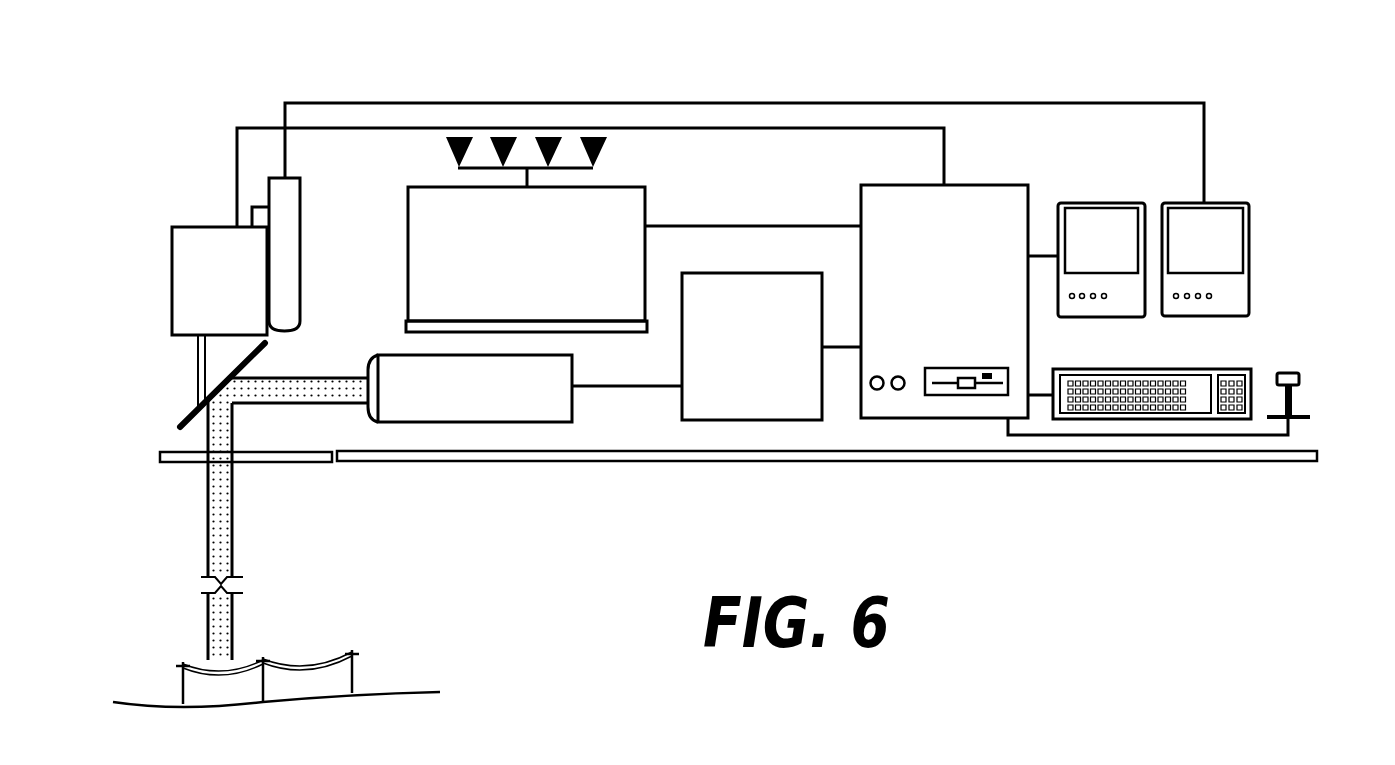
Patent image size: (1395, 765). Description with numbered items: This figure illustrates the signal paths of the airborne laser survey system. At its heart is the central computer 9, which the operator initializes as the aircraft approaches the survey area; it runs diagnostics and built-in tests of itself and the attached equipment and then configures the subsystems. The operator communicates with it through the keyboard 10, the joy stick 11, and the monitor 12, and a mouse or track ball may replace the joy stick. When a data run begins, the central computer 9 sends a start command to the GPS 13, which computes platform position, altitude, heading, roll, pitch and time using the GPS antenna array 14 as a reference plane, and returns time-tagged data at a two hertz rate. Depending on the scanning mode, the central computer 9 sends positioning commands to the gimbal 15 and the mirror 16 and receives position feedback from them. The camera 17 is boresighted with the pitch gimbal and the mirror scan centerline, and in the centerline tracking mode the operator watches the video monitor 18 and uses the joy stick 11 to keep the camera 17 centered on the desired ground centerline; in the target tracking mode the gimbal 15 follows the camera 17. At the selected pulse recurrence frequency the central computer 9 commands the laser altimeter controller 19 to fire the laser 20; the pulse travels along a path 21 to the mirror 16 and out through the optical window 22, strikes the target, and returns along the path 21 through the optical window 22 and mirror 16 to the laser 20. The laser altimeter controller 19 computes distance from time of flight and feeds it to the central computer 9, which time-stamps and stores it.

The central computer 9 is at (983, 192).
The keyboard 10 is at (1196, 385).
The joy stick 11 is at (1295, 397).
The monitor 12 is at (1105, 218).
The GPS 13 is at (625, 195).
The GPS antenna array 14 is at (503, 135).
The gimbal 15 is at (203, 240).
The mirror 16 is at (190, 412).
The camera 17 is at (287, 230).
The video monitor 18 is at (1220, 218).
The laser altimeter controller 19 is at (727, 280).
The laser 20 is at (487, 405).
The path 21 is at (310, 397).
The optical window 22 is at (185, 457).